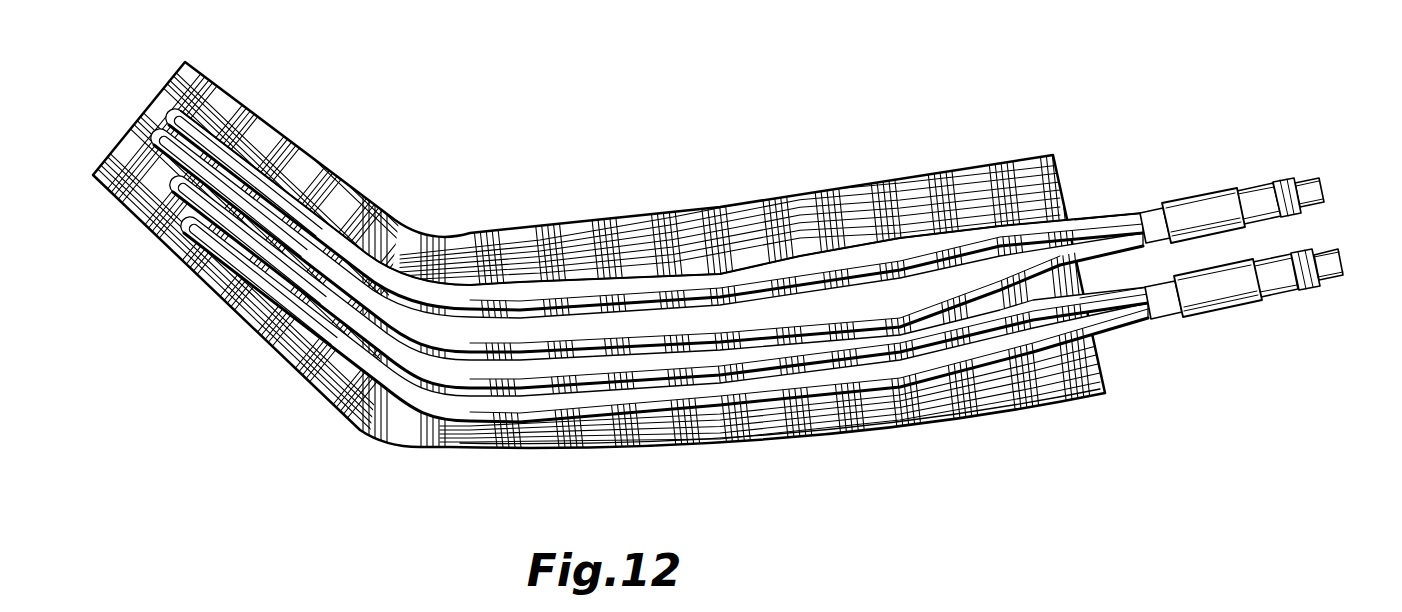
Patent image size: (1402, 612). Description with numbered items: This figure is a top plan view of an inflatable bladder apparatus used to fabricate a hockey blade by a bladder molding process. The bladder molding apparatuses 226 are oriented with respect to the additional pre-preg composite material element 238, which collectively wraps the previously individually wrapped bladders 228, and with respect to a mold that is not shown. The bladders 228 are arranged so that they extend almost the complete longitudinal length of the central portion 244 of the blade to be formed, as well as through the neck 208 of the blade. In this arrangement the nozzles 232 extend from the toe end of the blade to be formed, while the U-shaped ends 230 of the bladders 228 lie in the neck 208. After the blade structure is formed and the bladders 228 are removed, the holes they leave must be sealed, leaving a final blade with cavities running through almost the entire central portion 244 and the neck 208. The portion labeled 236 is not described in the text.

The neck 208 is at (328, 143).
The bladder molding apparatuses 226 is at (1225, 183).
The bladders 228 is at (1155, 195).
The U-shaped ends 230 is at (143, 132).
The nozzles 232 is at (1335, 190).
The tube outlet portion 236 is at (1090, 205).
The additional pre-preg composite material element 238 is at (760, 190).
The central portion 244 is at (818, 463).